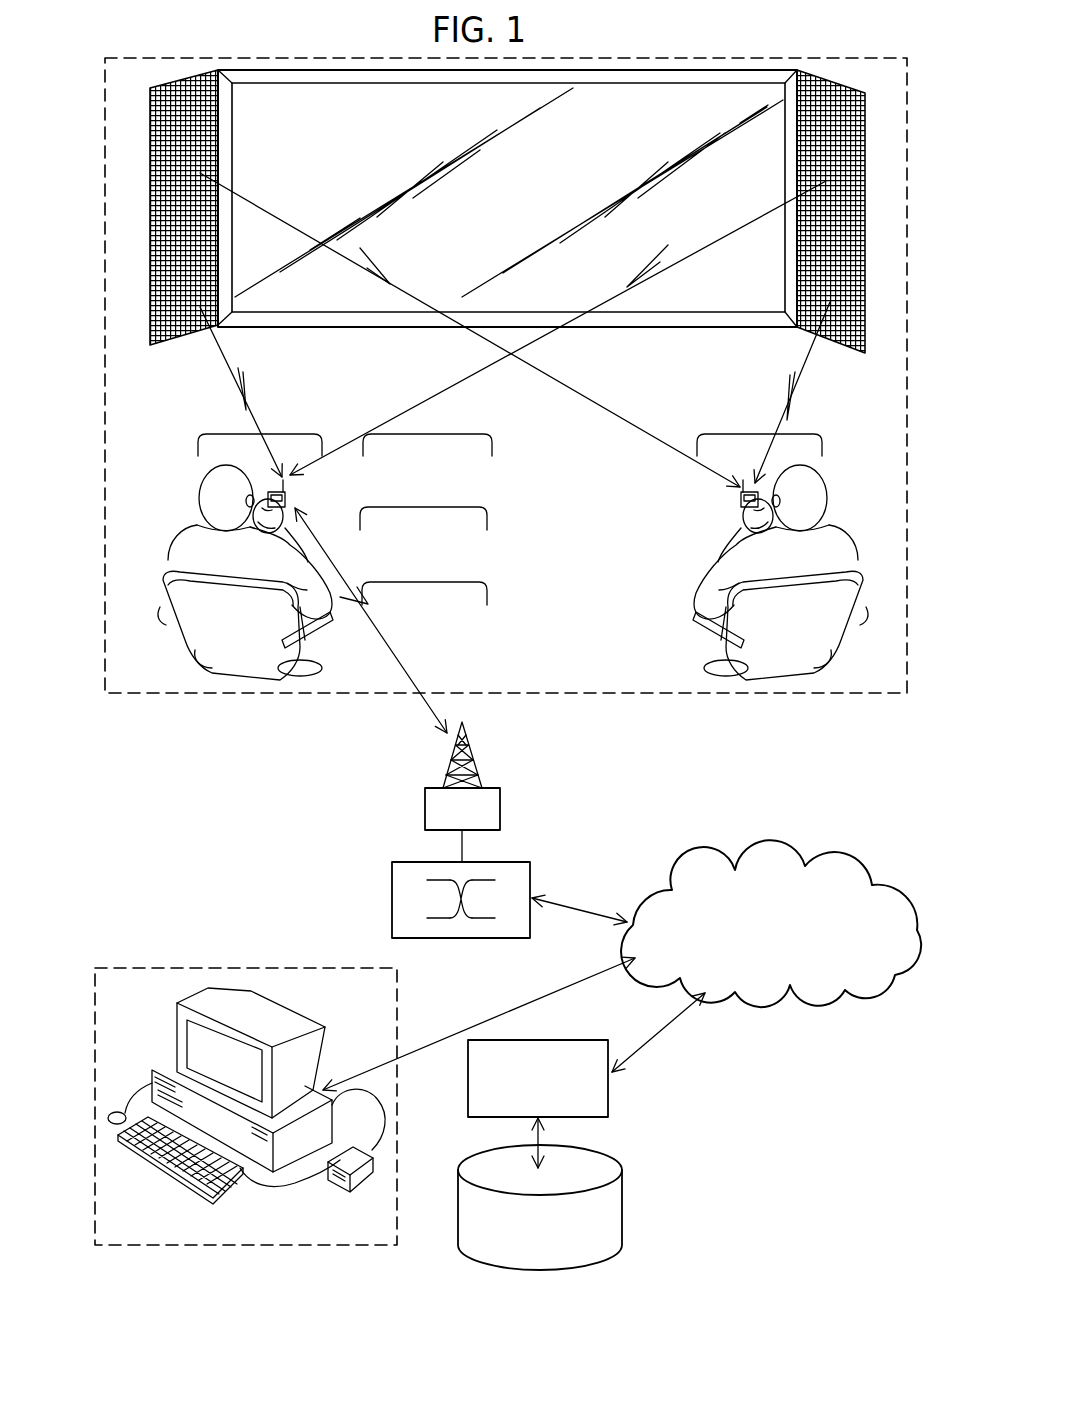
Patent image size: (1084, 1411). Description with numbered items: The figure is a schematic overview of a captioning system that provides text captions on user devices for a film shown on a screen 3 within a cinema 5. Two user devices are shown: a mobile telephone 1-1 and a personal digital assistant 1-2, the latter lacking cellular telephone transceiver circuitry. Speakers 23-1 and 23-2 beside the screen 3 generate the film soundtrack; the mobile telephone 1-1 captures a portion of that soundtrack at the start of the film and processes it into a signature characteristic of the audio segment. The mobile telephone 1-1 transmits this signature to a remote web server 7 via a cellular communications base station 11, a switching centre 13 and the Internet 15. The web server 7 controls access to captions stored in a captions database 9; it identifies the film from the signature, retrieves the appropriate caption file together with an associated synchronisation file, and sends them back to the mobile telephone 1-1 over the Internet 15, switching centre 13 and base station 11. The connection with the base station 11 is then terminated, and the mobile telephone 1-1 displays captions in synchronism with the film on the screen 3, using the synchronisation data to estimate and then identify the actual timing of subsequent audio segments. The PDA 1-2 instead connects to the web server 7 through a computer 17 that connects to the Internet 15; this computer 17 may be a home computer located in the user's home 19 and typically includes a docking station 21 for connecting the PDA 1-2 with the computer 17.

The mobile telephone 1-1 is at (290, 503).
The personal digital assistant 1-2 is at (740, 500).
The screen 3 is at (707, 293).
The cinema 5 is at (649, 695).
The remote web server 7 is at (608, 1107).
The captions database 9 is at (622, 1212).
The cellular communications base station 11 is at (425, 808).
The switching centre 13 is at (392, 895).
The Internet 15 is at (783, 977).
The computer 17 is at (168, 1004).
The user's home 19 is at (194, 968).
The docking station 21 is at (335, 1178).
The speaker 23-1 is at (156, 345).
The speaker 23-2 is at (863, 352).